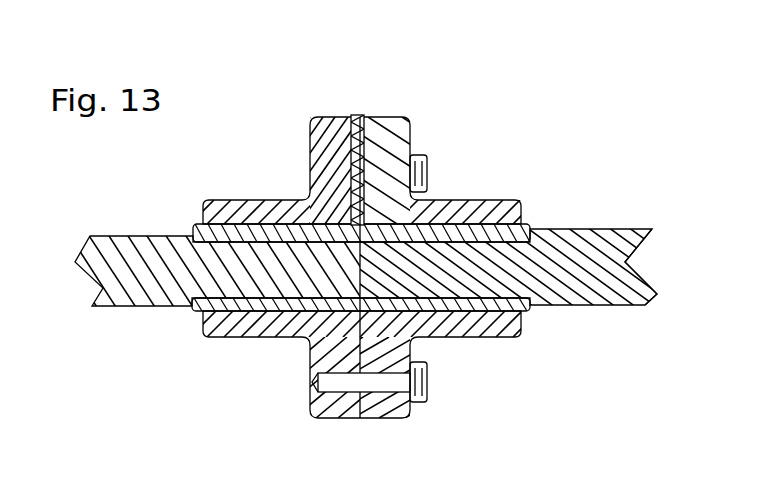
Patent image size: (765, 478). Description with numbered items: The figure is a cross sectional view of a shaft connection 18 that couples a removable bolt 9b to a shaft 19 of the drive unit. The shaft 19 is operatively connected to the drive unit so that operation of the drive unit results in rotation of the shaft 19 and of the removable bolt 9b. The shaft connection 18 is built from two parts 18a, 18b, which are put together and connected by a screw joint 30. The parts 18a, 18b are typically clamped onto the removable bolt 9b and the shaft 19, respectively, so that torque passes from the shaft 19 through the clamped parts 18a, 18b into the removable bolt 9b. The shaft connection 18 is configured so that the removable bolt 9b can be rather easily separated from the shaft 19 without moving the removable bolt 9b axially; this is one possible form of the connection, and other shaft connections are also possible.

The removable bolt 9b is at (153, 288).
The shaft connection 18 is at (383, 254).
The first part of the shaft connection 18a is at (318, 193).
The second part of the shaft connection 18b is at (495, 200).
The shaft 19 is at (578, 272).
The screw joint 30 is at (427, 162).